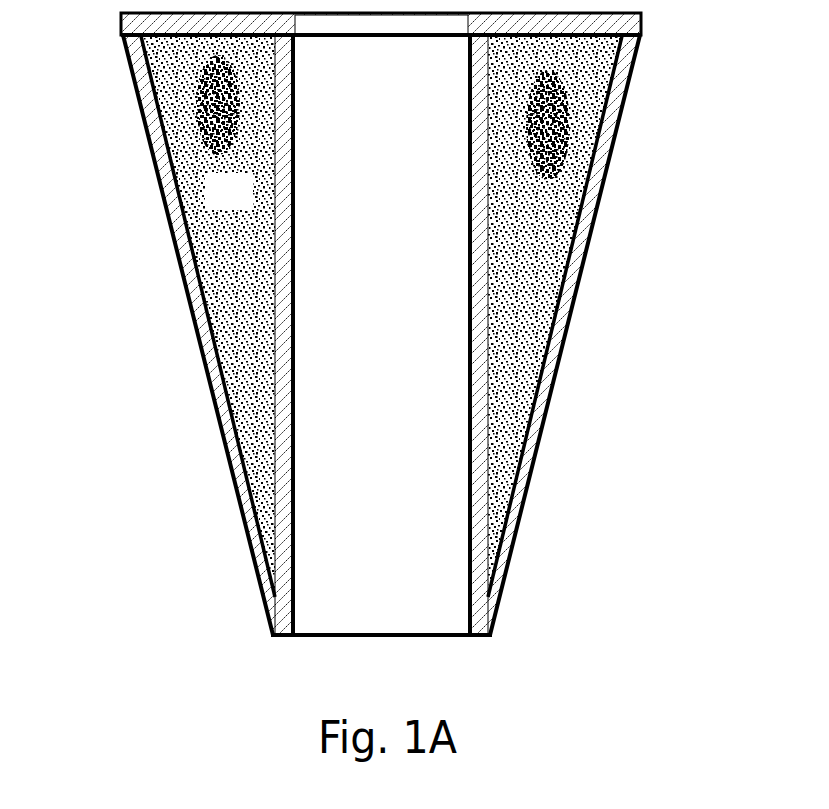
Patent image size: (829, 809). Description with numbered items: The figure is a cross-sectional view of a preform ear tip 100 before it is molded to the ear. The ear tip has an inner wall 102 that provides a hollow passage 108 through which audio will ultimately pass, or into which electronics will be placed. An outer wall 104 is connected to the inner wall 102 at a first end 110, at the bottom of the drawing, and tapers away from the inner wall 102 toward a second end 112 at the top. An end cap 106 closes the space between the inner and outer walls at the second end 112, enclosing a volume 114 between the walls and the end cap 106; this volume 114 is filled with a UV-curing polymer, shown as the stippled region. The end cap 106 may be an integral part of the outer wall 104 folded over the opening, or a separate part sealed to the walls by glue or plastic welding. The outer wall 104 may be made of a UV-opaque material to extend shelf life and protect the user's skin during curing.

The preform ear tip 100 is at (640, 200).
The inner wall 102 is at (478, 283).
The outer wall 104 is at (548, 388).
The end cap 106 is at (642, 29).
The hollow passage 108 is at (387, 442).
The first end 110 is at (470, 644).
The second end 112 is at (118, 36).
The volume 114 is at (250, 206).